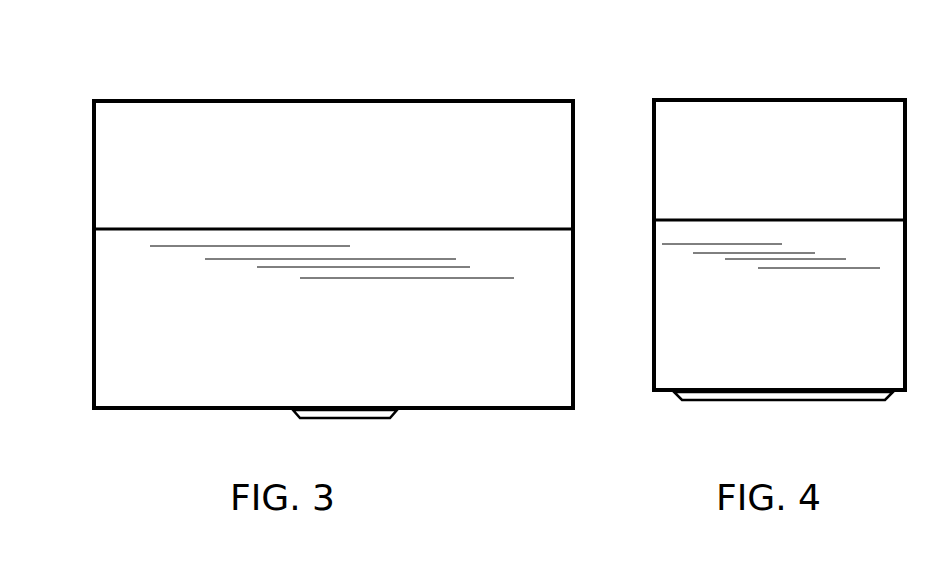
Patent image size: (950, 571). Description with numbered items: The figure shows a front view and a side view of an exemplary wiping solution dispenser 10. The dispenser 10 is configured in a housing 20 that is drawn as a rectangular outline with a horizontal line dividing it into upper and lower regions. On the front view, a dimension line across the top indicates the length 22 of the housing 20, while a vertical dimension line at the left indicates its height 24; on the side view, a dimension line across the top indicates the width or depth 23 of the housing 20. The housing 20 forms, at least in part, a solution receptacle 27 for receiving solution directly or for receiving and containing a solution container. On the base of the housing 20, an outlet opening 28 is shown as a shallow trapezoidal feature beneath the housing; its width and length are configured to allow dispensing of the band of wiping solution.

In FIG. 3, the wiping solution dispenser 10 is at (88, 92).
In FIG. 4, the wiping solution dispenser 10 is at (636, 146).
In FIG. 3, the housing 20 is at (546, 366).
In FIG. 4, the housing 20 is at (664, 205).
In FIG. 3, the length 22 is at (570, 90).
In FIG. 4, the width or depth 23 is at (655, 92).
In FIG. 3, the height 24 is at (292, 422).
In FIG. 3, the solution receptacle 27 is at (270, 145).
In FIG. 4, the solution receptacle 27 is at (746, 143).
In FIG. 3, the outlet opening 28 is at (360, 420).
In FIG. 4, the outlet opening 28 is at (790, 402).